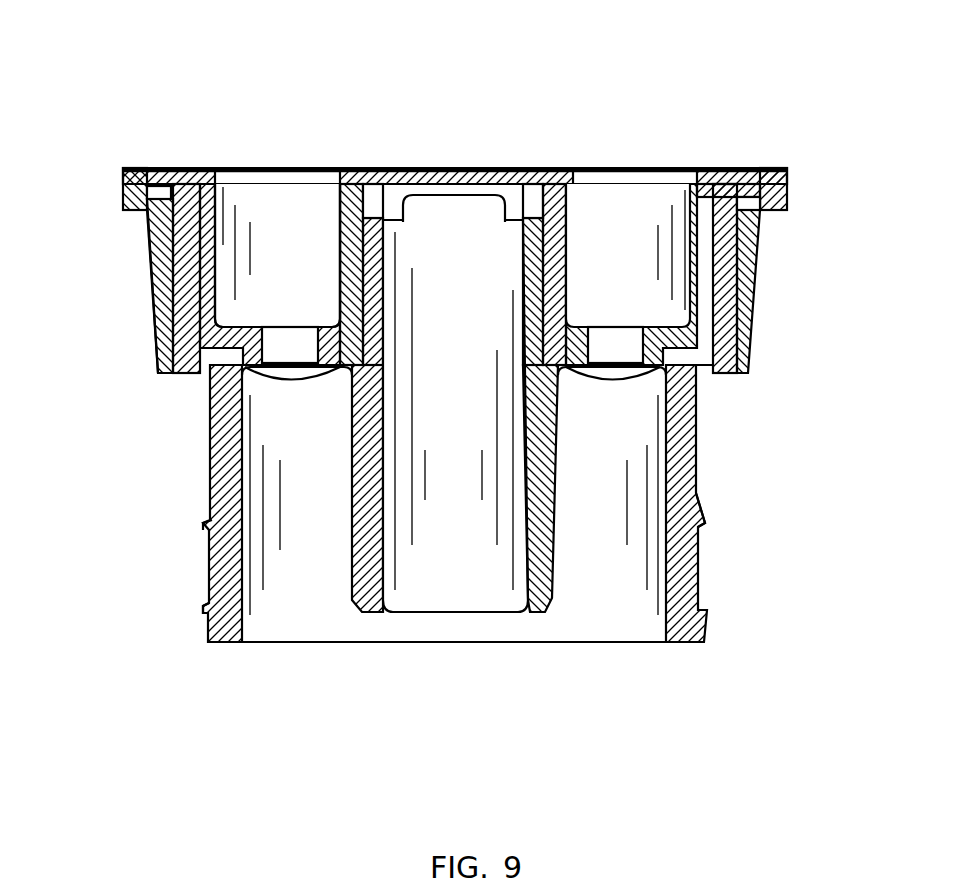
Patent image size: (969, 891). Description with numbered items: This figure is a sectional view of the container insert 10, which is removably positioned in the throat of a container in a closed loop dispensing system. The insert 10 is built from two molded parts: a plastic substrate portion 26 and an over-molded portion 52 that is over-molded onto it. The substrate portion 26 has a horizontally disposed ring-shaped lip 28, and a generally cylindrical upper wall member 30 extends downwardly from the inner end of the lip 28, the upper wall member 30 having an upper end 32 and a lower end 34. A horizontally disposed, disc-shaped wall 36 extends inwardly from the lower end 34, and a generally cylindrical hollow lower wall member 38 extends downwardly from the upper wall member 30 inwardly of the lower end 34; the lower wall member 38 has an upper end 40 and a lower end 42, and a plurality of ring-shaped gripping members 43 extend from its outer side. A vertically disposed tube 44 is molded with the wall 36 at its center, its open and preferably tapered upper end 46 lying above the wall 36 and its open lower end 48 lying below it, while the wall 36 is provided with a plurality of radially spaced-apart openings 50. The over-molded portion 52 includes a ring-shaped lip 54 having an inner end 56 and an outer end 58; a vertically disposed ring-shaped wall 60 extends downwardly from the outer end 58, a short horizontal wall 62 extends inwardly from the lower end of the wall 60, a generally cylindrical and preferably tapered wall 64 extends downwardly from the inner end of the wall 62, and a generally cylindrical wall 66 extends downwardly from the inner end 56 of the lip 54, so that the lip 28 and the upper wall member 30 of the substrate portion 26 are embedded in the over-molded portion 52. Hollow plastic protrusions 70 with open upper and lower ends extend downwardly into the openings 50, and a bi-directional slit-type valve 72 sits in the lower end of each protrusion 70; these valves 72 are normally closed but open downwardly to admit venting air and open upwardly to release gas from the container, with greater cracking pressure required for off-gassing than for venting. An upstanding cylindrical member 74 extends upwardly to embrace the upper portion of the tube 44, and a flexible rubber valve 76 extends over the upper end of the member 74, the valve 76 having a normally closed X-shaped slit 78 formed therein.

The container insert 10 is at (725, 128).
The substrate portion 26 is at (742, 499).
The lip 28 is at (753, 168).
The upper wall member 30 is at (737, 271).
The upper end 32 is at (762, 233).
The lower end 34 is at (753, 360).
The wall 36 is at (703, 343).
The lower wall member 38 is at (682, 530).
The upper end 40 is at (693, 377).
The lower end 42 is at (690, 643).
The gripping members 43 is at (203, 613).
The tube 44 is at (574, 278).
The upper end 46 is at (515, 168).
The lower end 48 is at (537, 614).
The openings 50 is at (343, 350).
The over-molded portion 52 is at (143, 335).
The lip 54 is at (160, 166).
The inner end 56 is at (233, 168).
The outer end 58 is at (118, 168).
The wall 60 is at (122, 205).
The wall 62 is at (147, 222).
The wall 64 is at (143, 279).
The wall 66 is at (214, 238).
The protrusions 70 is at (300, 327).
The bi-directional slit-type valve 72 is at (293, 377).
The cylindrical member 74 is at (637, 168).
The valve 76 is at (405, 168).
The slit 78 is at (460, 168).